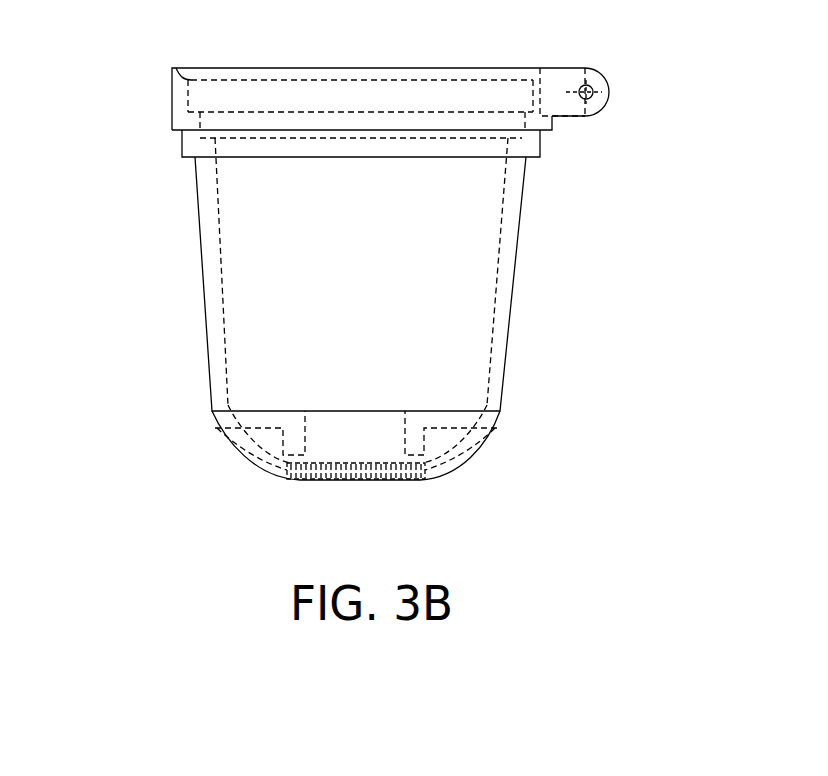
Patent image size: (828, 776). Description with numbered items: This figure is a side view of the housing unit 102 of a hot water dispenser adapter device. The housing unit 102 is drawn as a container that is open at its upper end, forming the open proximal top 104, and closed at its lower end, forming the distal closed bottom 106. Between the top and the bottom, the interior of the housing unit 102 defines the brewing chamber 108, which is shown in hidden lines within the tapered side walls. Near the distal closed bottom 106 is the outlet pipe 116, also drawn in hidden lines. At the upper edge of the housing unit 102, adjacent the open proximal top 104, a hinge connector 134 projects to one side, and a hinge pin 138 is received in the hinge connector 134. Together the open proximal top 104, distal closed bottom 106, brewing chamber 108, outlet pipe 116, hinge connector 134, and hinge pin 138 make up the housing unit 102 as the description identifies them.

The housing unit 102 is at (203, 272).
The open proximal top 104 is at (171, 83).
The distal closed bottom 106 is at (236, 458).
The brewing chamber 108 is at (487, 253).
The outlet pipe 116 is at (357, 422).
The hinge connector 134 is at (600, 114).
The hinge pin 138 is at (593, 90).